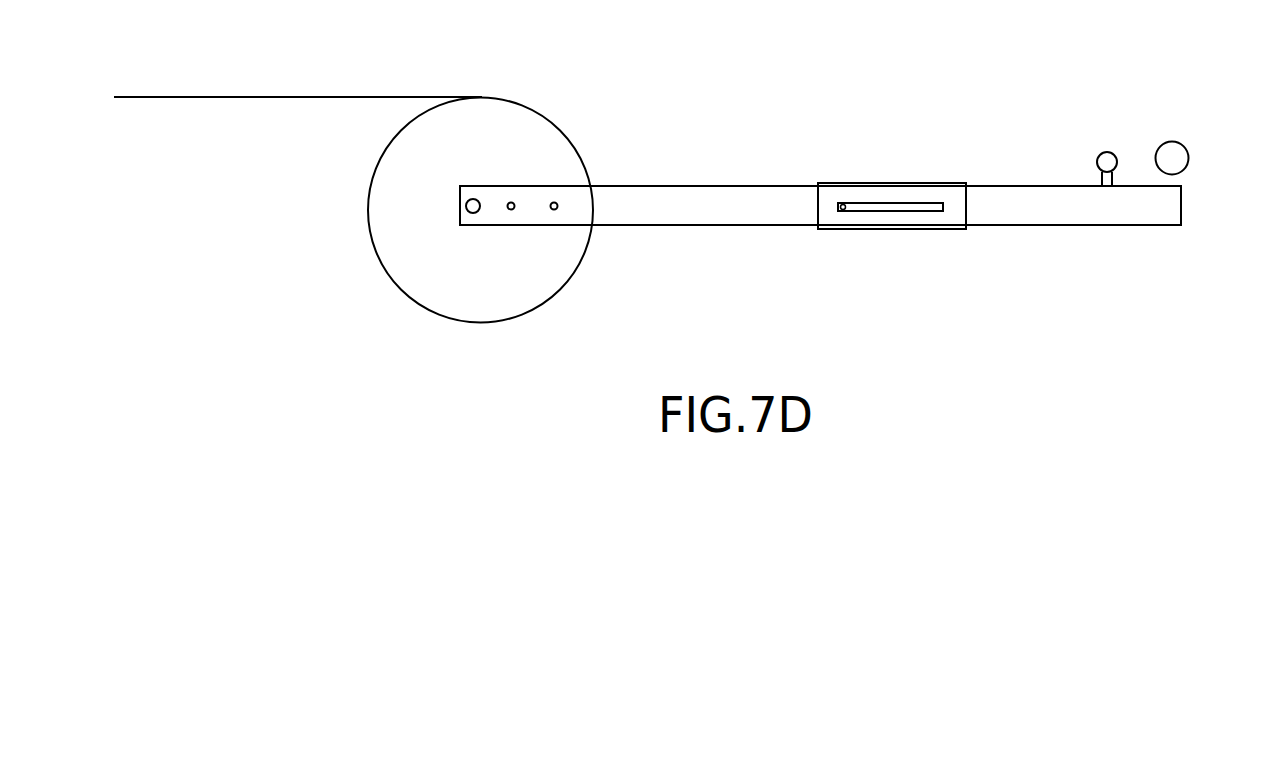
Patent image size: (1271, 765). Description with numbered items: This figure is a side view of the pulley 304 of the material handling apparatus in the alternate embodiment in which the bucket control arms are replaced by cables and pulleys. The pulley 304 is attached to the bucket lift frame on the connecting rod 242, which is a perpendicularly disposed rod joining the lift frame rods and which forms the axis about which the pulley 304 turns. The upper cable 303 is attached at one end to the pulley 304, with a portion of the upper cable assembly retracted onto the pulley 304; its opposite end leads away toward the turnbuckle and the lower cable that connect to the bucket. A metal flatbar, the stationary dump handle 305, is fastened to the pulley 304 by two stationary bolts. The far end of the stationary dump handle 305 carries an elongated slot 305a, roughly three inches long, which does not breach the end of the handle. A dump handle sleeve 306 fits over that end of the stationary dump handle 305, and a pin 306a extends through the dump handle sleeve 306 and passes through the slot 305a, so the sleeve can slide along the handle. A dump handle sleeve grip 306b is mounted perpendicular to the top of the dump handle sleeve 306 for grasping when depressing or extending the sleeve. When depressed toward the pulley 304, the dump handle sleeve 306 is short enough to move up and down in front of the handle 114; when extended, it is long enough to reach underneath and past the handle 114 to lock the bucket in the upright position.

The upper cable 303 is at (230, 97).
The pulley 304 is at (427, 277).
The connecting rod 242 is at (467, 204).
The stationary dump handle 305 is at (673, 207).
The elongated slot 305a is at (902, 200).
The pin 306a is at (845, 209).
The dump handle sleeve 306 is at (1055, 208).
The dump handle sleeve grip 306b is at (1105, 153).
The handle 114 is at (1175, 153).